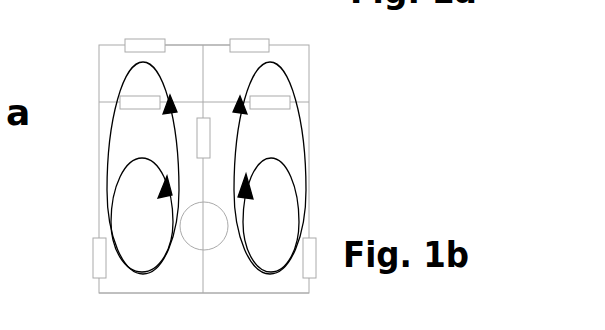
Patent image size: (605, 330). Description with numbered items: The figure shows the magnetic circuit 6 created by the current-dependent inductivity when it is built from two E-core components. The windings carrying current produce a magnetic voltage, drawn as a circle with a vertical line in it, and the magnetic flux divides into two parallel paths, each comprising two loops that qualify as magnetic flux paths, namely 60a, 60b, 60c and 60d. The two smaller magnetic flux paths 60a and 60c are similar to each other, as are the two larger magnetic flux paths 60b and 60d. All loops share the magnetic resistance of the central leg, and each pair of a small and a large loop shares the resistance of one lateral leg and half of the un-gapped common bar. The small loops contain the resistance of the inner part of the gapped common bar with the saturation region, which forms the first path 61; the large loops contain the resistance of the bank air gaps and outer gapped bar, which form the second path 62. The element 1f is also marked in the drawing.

The magnetic circuit 6 is at (98, 205).
The small magnetic flux path 60a is at (118, 168).
The large magnetic flux path 60b is at (110, 143).
The small magnetic flux path 60c is at (290, 170).
The large magnetic flux path 60d is at (298, 120).
The first path 61 is at (183, 100).
The second path 62 is at (195, 44).
The ground line 1f is at (222, 329).